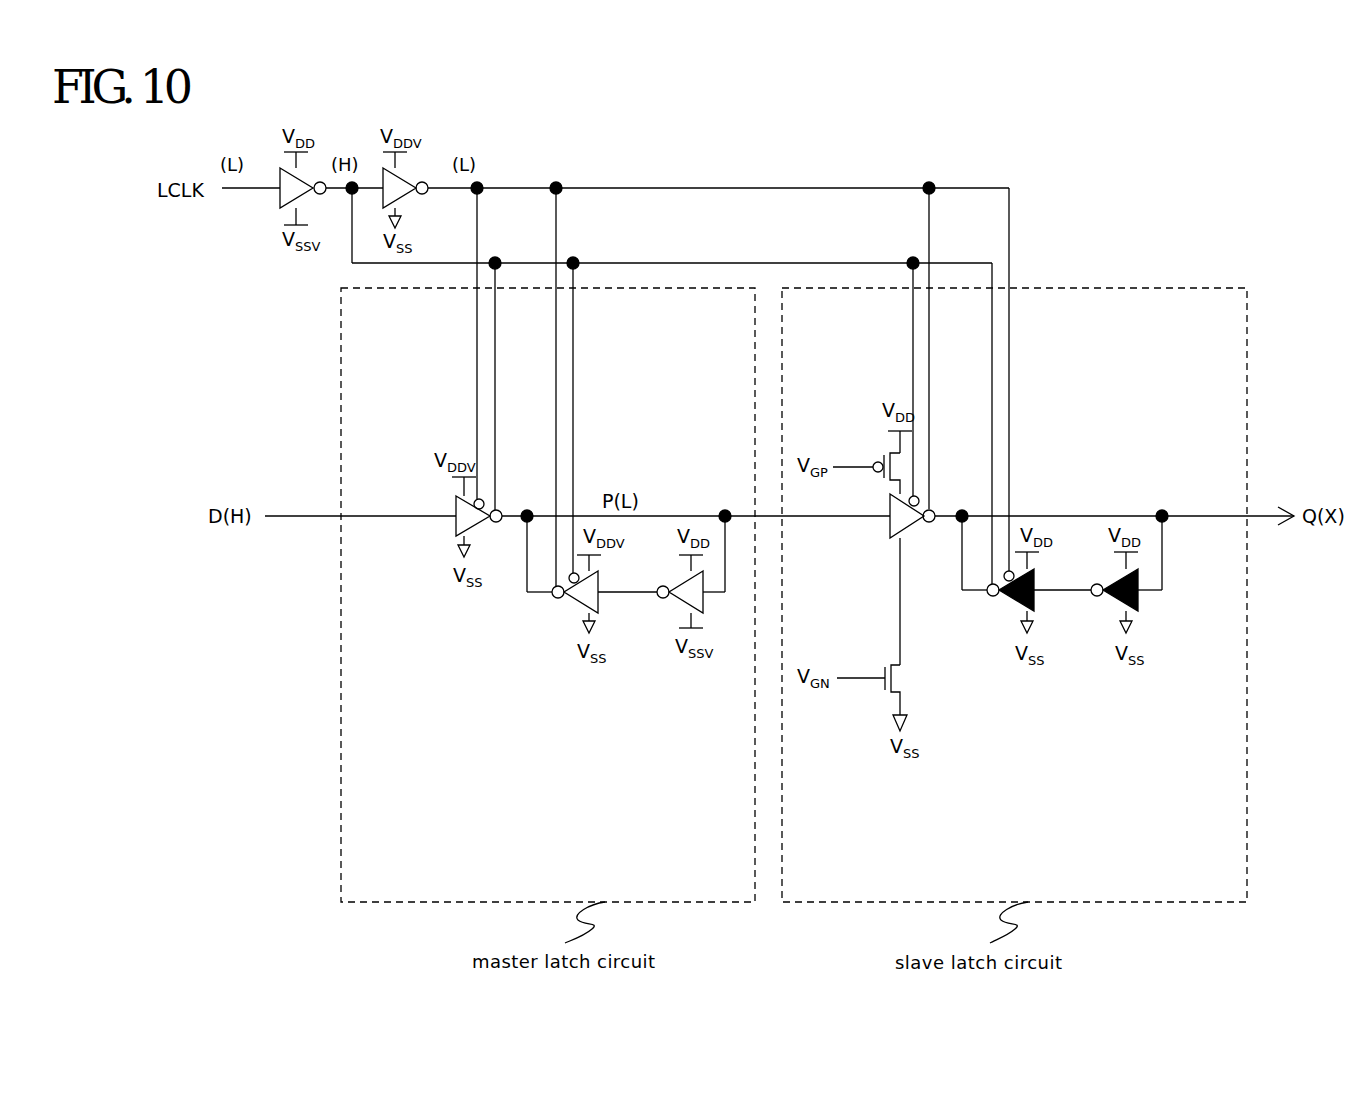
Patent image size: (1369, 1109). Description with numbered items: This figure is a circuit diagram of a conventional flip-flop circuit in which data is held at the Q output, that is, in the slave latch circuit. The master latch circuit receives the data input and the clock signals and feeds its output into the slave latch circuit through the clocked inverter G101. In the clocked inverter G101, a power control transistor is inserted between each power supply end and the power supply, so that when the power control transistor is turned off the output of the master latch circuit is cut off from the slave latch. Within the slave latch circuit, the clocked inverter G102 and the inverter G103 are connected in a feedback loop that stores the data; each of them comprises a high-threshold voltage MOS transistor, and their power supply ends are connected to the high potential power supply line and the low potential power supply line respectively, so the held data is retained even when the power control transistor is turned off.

The clocked inverter G101 is at (881, 528).
The clocked inverter G102 is at (989, 601).
The inverter G103 is at (1155, 598).